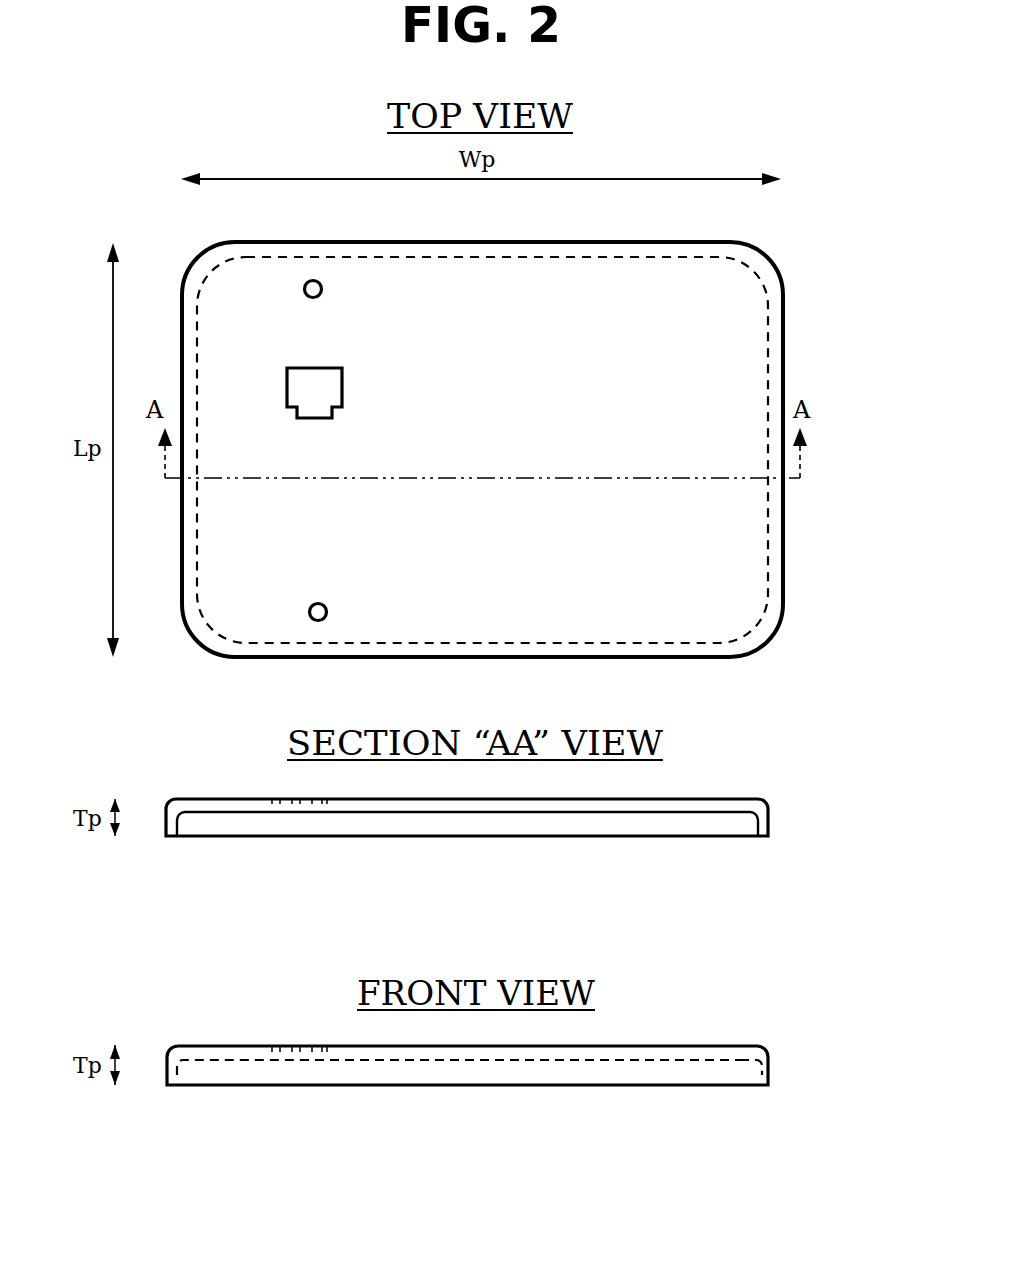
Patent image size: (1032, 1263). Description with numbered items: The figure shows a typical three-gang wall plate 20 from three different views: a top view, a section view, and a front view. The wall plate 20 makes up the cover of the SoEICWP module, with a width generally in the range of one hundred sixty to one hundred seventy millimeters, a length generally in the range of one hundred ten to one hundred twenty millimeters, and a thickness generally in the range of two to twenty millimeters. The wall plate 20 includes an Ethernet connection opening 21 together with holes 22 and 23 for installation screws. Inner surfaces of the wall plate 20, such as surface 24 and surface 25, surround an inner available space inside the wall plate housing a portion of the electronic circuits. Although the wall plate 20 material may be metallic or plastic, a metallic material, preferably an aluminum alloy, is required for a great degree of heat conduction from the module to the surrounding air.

The wall plate 20 is at (806, 237).
The Ethernet connection opening 21 is at (328, 368).
The hole for installation screw 22 is at (313, 280).
The hole for installation screw 23 is at (324, 603).
The inner surface 24 is at (768, 438).
The inner surface 25 is at (552, 813).